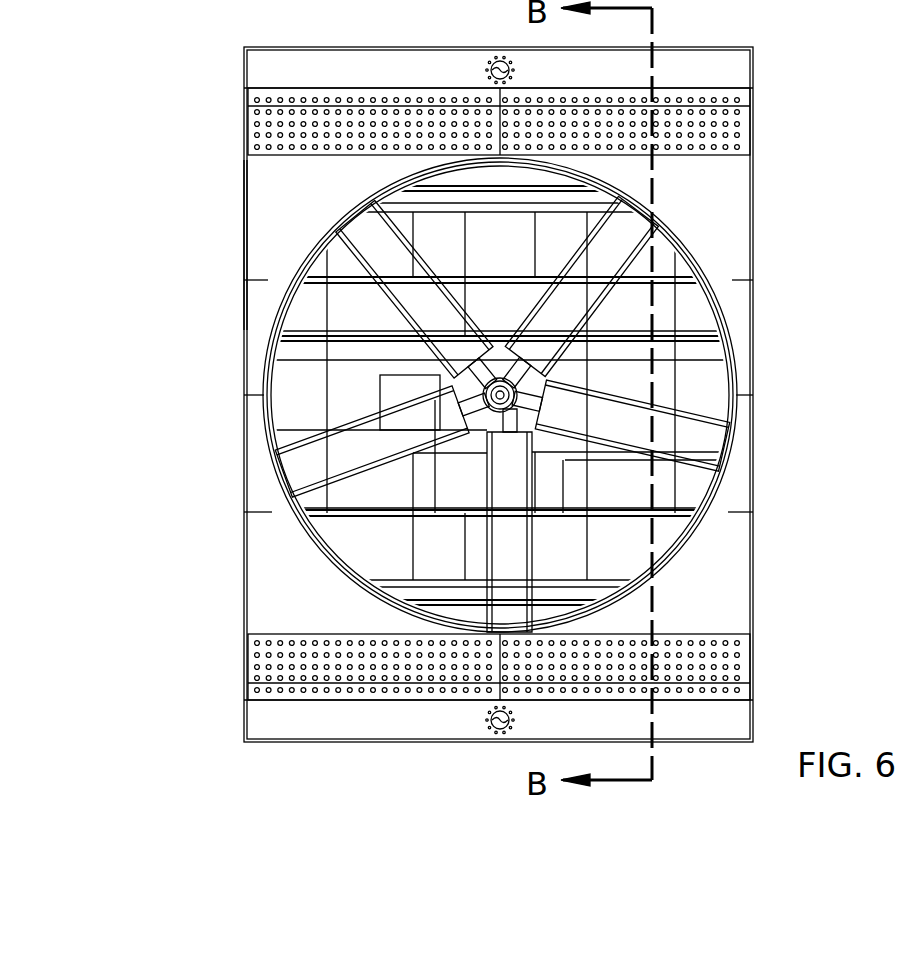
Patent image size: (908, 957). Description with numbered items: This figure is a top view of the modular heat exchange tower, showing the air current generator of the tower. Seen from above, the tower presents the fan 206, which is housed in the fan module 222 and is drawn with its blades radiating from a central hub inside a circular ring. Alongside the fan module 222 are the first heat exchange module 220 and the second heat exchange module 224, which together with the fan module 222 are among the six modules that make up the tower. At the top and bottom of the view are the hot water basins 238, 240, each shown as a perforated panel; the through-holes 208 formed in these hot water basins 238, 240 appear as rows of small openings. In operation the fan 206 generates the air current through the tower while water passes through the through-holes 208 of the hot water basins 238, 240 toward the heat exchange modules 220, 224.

The fan 206 is at (687, 450).
The through-holes 208 is at (745, 100).
The first heat exchange module 220 is at (244, 587).
The fan module 222 is at (244, 452).
The second heat exchange module 224 is at (244, 237).
The hot water basin 238 is at (260, 665).
The hot water basin 240 is at (255, 140).